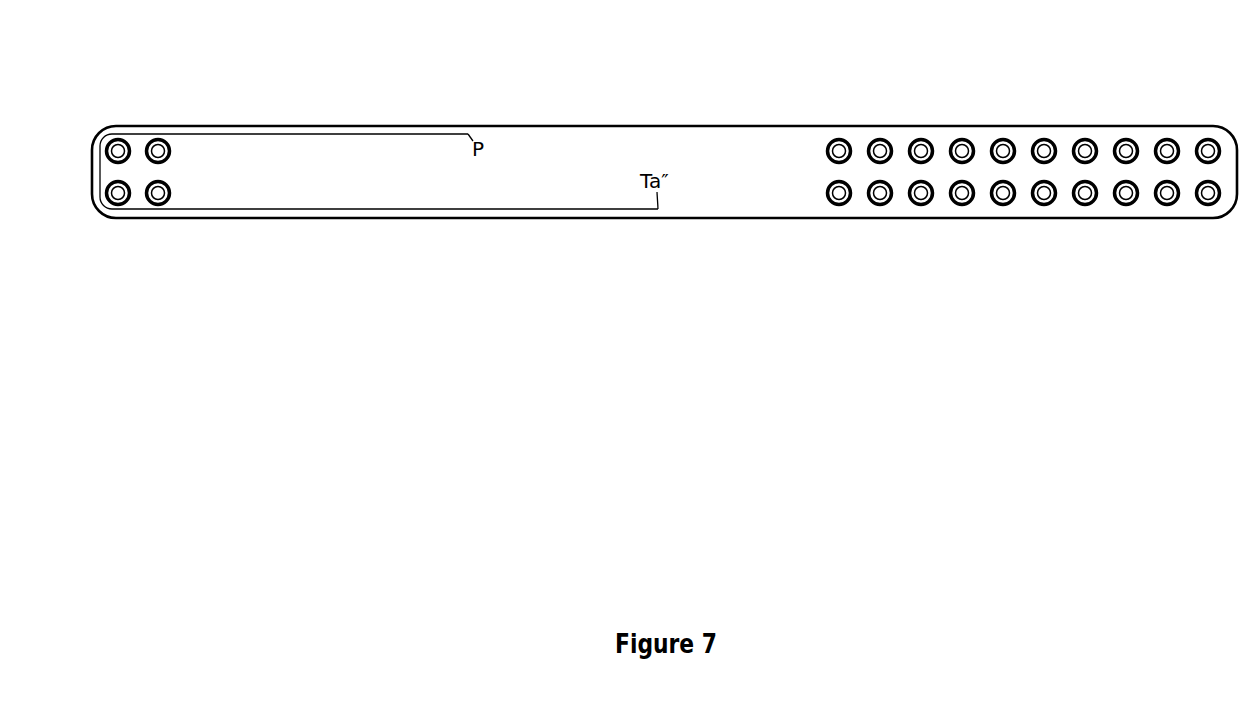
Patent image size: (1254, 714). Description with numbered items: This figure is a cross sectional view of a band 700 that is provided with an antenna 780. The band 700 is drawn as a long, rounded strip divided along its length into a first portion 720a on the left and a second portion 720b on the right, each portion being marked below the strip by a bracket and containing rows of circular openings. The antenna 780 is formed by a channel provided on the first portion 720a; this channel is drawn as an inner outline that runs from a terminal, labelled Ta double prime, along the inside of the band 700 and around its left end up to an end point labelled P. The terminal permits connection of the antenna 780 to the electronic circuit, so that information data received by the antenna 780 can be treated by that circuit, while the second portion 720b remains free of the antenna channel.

The band 700 is at (179, 324).
The antenna 780 is at (243, 118).
The first portion 720a is at (658, 228).
The second portion 720b is at (677, 228).